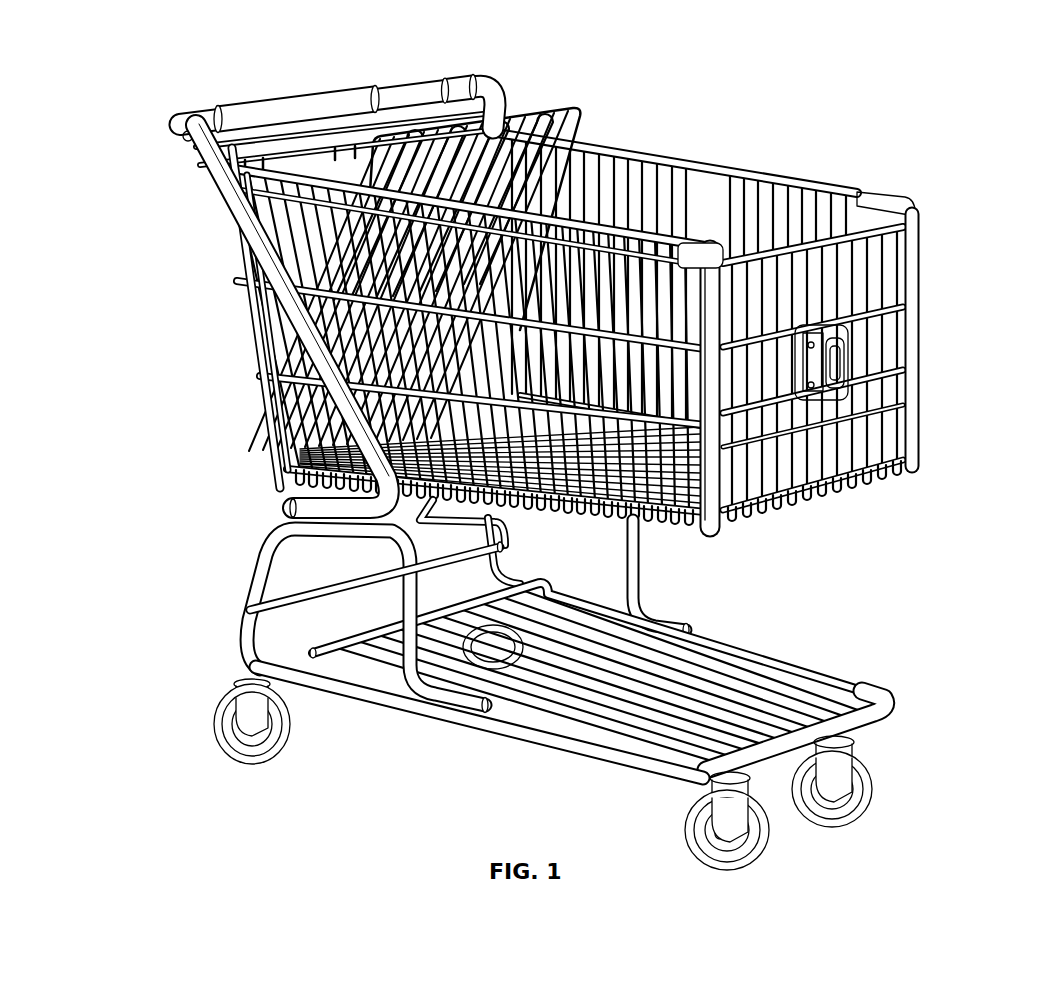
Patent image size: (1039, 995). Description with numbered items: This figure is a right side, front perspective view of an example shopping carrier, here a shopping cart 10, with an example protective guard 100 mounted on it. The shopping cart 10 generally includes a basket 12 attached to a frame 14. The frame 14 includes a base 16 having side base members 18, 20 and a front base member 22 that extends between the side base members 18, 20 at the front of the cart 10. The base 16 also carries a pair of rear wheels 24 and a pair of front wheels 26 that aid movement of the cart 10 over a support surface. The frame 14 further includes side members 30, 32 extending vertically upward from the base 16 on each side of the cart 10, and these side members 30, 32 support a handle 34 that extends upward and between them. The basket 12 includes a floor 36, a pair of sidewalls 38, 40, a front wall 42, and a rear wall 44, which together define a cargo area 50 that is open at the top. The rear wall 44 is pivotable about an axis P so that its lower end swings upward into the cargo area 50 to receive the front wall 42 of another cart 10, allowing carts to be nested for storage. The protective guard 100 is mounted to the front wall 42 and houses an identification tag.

The shopping cart 10 is at (128, 73).
The basket 12 is at (594, 344).
The frame 14 is at (243, 584).
The base 16 is at (826, 701).
The side base member 18 is at (735, 662).
The side base member 20 is at (531, 741).
The front base member 22 is at (873, 720).
The rear wheels 24 is at (447, 614).
The front wheels 26 is at (880, 792).
The side member 30 is at (241, 611).
The side member 32 is at (650, 553).
The handle 34 is at (283, 93).
The floor 36 is at (846, 494).
The sidewall 38 is at (261, 331).
The sidewall 40 is at (775, 200).
The front wall 42 is at (901, 361).
The rear wall 44 is at (259, 372).
The cargo area 50 is at (596, 180).
The protective guard 100 is at (868, 384).
The axis P is at (185, 143).